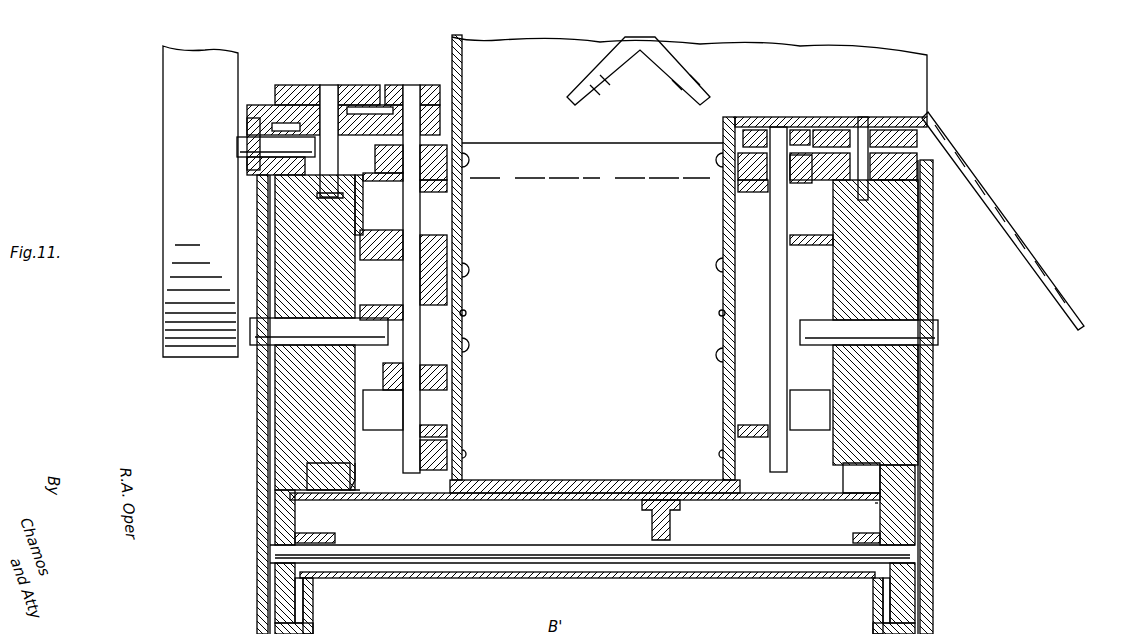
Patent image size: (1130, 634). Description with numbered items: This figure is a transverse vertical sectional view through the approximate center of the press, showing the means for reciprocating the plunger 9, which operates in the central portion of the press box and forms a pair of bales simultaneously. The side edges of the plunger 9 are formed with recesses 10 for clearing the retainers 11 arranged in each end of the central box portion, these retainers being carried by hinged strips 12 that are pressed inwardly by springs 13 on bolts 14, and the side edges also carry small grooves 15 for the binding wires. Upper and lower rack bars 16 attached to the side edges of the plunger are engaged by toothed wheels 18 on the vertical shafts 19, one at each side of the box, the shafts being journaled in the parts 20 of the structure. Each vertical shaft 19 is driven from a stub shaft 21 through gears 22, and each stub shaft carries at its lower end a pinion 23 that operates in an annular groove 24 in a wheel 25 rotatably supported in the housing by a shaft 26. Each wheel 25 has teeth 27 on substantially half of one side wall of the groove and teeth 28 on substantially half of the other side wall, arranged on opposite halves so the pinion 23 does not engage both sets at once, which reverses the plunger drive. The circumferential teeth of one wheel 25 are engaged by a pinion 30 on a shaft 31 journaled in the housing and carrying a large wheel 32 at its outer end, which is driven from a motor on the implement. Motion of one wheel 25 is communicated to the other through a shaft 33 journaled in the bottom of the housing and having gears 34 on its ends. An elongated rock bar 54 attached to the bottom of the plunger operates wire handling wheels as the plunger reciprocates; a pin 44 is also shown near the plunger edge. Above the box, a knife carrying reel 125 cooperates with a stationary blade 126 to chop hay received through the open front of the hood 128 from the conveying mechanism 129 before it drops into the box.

The reciprocatory plunger 9 is at (592, 221).
The recesses 10 is at (470, 160).
The retainers 11 is at (440, 590).
The hinged strips 12 is at (598, 212).
The springs 13 is at (882, 103).
The bolts 14 is at (855, 118).
The small grooves 15 is at (466, 313).
The rack bars 16 is at (465, 188).
The toothed wheels 18 is at (420, 195).
The vertical shafts 19 is at (415, 88).
The parts 20 is at (488, 455).
The stub shaft 21 is at (329, 86).
The gears 22 is at (378, 90).
The pinion 23 is at (300, 183).
The annular groove 24 is at (322, 480).
The wheel 25 is at (280, 405).
The shaft 26 is at (948, 330).
The teeth 27 is at (905, 181).
The teeth 28 is at (355, 490).
The pinion 30 is at (280, 118).
The shaft 31 is at (245, 148).
The large wheel 32 is at (172, 116).
The shaft 33 is at (495, 547).
The gears 34 is at (290, 598).
The pin 44 is at (717, 313).
The rock bar 54 is at (672, 517).
The knife carrying reel 125 is at (690, 62).
The stationary blade 126 is at (722, 127).
The hood 128 is at (912, 67).
The conveying mechanism 129 is at (1018, 235).